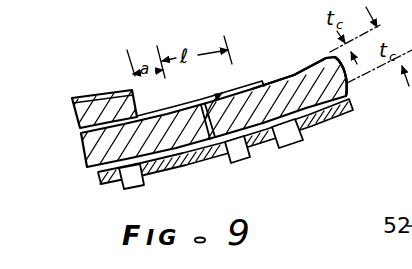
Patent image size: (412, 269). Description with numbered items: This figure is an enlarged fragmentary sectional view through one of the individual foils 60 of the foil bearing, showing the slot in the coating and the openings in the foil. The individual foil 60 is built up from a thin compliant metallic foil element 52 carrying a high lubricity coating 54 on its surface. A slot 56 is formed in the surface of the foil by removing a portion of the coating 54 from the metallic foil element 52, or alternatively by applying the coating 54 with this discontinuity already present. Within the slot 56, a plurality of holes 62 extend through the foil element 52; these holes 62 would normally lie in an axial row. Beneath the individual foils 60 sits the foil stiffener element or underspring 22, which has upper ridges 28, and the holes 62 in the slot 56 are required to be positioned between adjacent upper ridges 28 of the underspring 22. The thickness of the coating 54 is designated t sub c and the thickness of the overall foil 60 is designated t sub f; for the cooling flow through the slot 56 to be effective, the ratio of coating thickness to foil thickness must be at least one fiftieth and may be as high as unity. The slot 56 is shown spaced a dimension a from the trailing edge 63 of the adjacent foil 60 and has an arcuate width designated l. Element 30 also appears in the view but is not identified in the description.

The individual foil 60 is at (78, 92).
The trailing edge 63 is at (132, 108).
The slot 56 is at (232, 95).
The holes 62 is at (208, 120).
The high lubricity coating 54 is at (302, 67).
The thin compliant metallic foil element 52 is at (347, 88).
The hatched strip 30 is at (244, 158).
The foil stiffener element or underspring 22 is at (117, 190).
The upper ridges 28 is at (294, 142).